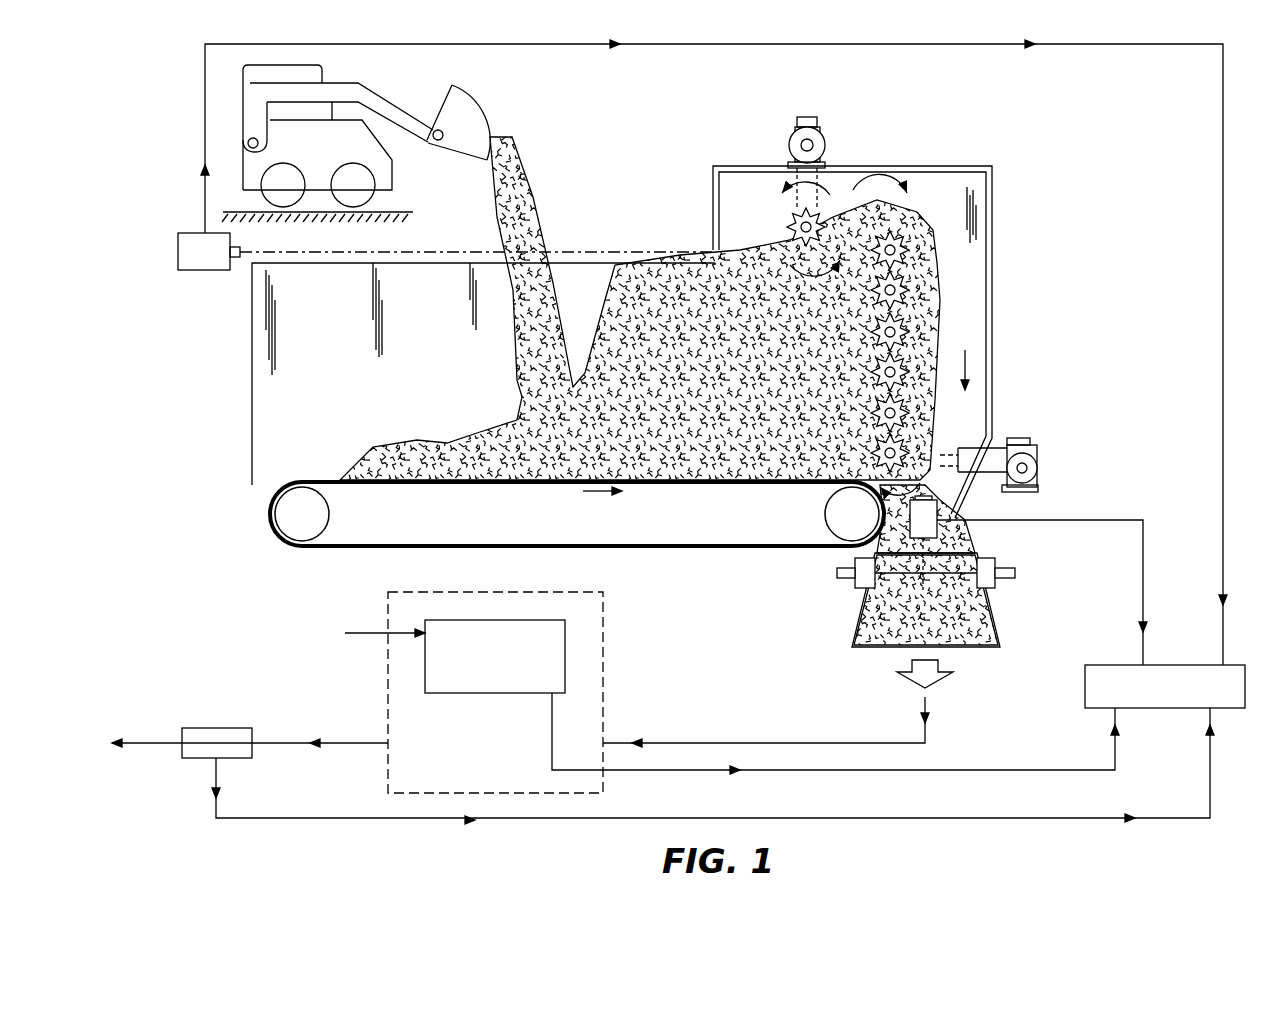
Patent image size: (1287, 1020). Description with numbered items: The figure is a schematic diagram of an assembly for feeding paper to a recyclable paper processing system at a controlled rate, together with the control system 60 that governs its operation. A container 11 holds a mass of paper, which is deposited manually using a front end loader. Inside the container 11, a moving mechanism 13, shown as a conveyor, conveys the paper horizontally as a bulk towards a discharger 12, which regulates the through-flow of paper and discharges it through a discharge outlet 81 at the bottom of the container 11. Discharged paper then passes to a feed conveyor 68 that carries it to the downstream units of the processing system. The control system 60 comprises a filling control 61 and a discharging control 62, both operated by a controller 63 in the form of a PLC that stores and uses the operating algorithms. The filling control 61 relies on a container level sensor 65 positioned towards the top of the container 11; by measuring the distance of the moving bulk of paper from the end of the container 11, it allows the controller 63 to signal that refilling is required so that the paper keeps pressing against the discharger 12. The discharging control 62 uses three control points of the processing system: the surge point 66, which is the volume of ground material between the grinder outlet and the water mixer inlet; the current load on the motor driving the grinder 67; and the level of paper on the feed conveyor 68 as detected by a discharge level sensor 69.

The control system 60 is at (945, 752).
The filling control 61 is at (188, 132).
The container level sensor 65 is at (190, 252).
The container 11 is at (333, 435).
The discharger 12 is at (948, 250).
The moving mechanism 13 is at (655, 552).
The discharge outlet 81 is at (963, 491).
The feed conveyor 68 is at (862, 600).
The discharge level sensor 69 is at (947, 530).
The discharging control 62 is at (942, 585).
The controller (PLC) 63 is at (1232, 675).
The surge point 66 is at (210, 730).
The grinder 67 is at (503, 780).